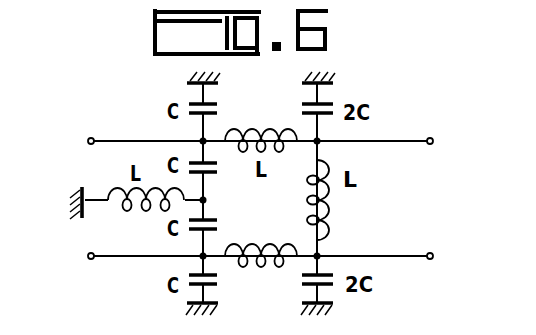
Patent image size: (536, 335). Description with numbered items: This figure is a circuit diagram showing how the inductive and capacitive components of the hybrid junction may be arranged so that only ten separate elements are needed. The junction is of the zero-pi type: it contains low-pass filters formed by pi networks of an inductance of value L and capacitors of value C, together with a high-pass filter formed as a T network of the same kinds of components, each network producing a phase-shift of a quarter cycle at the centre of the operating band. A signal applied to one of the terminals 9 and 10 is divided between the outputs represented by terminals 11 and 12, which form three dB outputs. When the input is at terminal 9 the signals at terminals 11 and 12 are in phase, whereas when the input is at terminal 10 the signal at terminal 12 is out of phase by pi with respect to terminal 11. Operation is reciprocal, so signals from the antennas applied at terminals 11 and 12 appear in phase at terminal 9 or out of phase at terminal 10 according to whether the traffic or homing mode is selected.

The terminal 9 is at (437, 112).
The terminal 10 is at (88, 258).
The terminal 11 is at (433, 257).
The terminal 12 is at (89, 139).